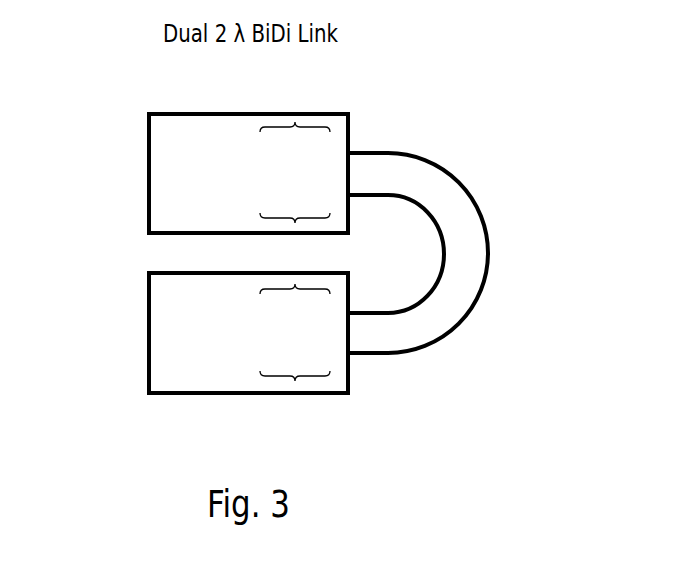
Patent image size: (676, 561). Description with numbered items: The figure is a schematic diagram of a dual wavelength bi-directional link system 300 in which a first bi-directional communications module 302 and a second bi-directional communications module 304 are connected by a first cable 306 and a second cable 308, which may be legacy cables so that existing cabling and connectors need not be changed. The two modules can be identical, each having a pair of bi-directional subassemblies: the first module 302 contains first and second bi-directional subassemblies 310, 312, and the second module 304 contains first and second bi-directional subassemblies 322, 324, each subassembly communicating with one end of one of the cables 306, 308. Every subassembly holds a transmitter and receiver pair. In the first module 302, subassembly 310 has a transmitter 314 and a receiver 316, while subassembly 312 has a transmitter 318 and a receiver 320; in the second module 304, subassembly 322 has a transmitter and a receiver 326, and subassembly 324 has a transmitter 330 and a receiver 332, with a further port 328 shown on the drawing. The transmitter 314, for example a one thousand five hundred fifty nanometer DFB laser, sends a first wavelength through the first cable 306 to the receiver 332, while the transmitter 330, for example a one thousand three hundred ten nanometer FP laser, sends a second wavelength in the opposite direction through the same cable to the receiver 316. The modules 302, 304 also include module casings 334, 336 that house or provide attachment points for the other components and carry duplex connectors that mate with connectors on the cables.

The dual wavelength bi-directional link system 300 is at (496, 164).
The first bi-directional communications module 302 is at (168, 172).
The second bi-directional communications module 304 is at (168, 332).
The first cable 306 is at (488, 245).
The second cable 308 is at (444, 267).
The first bi-directional subassembly 310 is at (295, 122).
The second bi-directional subassembly 312 is at (295, 223).
The transmitter 314 is at (257, 153).
The receiver 316 is at (340, 150).
The transmitter 318 is at (255, 190).
The receiver 320 is at (340, 190).
The first bi-directional subassembly 322 is at (295, 284).
The second bi-directional subassembly 324 is at (295, 381).
The transmitter and receiver of subassembly 322 326 is at (255, 313).
The port of T1R2 transceiver, second module 328 is at (337, 318).
The transmitter 330 is at (255, 355).
The receiver 332 is at (337, 357).
The module casing 334 is at (149, 207).
The module casing 336 is at (149, 365).